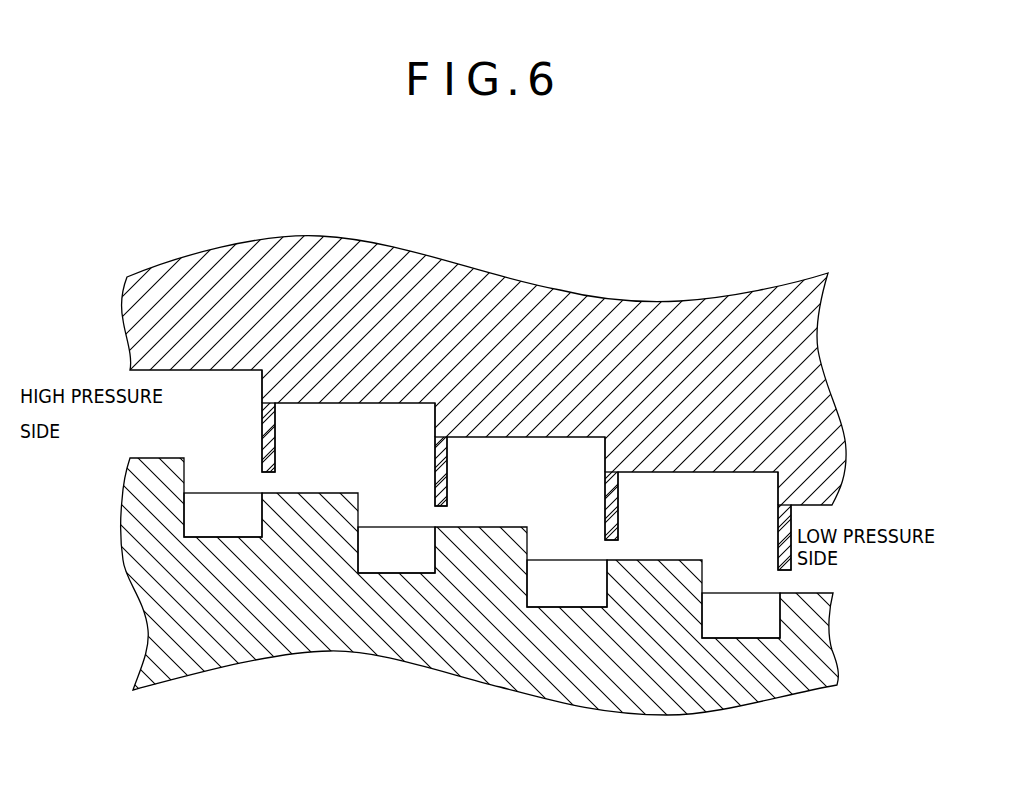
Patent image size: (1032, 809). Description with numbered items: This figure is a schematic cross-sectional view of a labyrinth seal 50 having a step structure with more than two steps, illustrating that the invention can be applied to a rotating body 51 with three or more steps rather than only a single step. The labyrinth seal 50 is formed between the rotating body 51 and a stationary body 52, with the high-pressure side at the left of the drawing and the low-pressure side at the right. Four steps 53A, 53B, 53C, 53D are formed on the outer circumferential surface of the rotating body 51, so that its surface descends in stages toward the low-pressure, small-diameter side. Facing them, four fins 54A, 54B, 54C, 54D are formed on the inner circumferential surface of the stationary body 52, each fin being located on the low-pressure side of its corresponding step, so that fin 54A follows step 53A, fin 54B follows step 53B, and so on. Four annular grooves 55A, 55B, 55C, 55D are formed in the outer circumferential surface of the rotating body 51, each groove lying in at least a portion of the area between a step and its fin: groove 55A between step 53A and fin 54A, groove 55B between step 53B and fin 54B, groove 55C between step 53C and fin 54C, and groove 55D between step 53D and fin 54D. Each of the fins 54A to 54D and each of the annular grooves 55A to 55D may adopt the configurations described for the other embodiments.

The labyrinth seal 50 is at (100, 355).
The rotating body 51 is at (827, 636).
The stationary body 52 is at (823, 396).
The step 53A is at (184, 473).
The step 53B is at (358, 508).
The step 53C is at (527, 540).
The step 53D is at (702, 573).
The fin 54A is at (263, 413).
The fin 54B is at (435, 446).
The fin 54C is at (605, 480).
The fin 54D is at (778, 515).
The annular groove 55A is at (228, 485).
The annular groove 55B is at (404, 518).
The annular groove 55C is at (574, 549).
The annular groove 55D is at (746, 581).